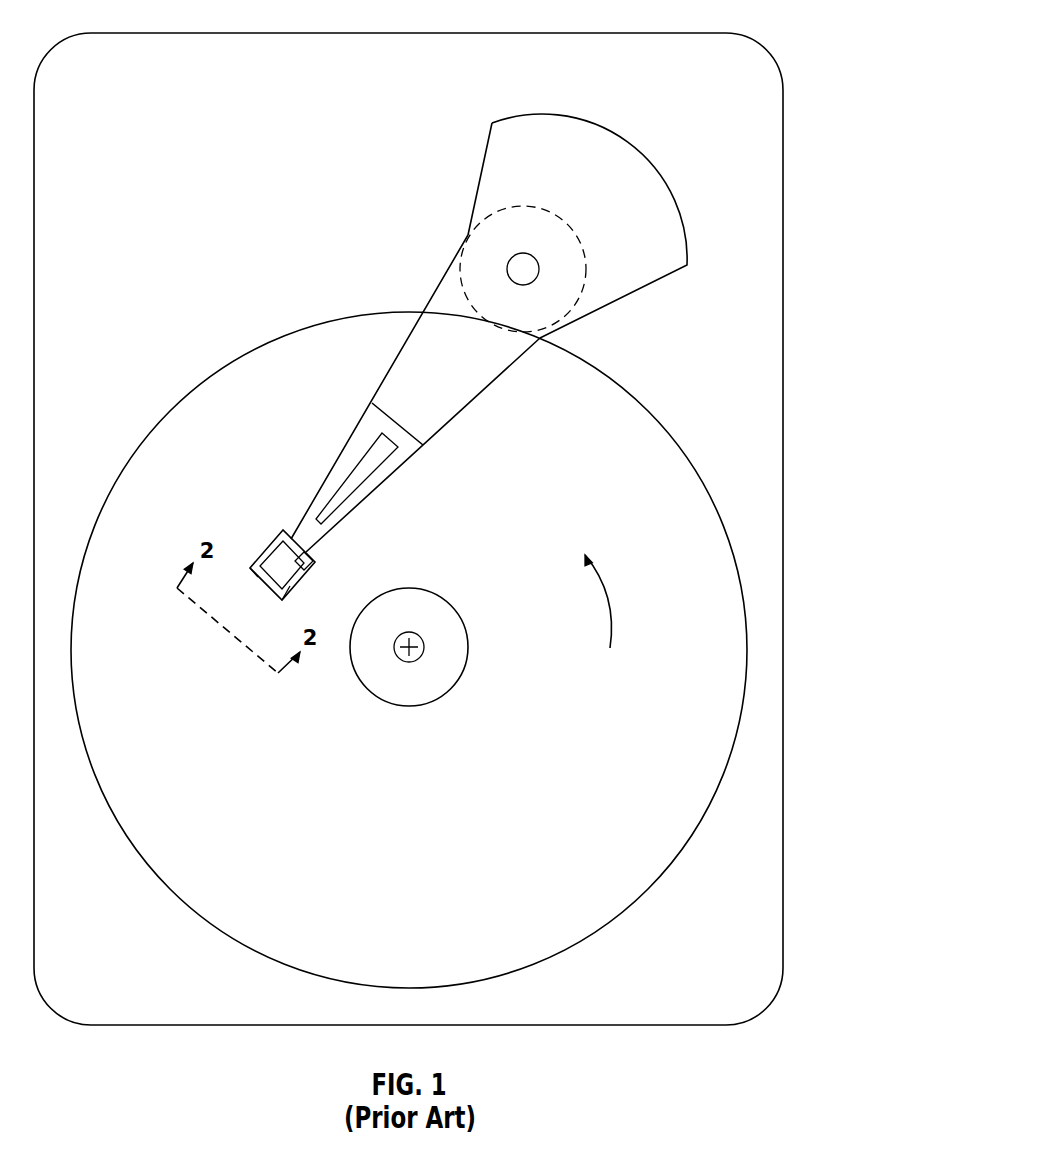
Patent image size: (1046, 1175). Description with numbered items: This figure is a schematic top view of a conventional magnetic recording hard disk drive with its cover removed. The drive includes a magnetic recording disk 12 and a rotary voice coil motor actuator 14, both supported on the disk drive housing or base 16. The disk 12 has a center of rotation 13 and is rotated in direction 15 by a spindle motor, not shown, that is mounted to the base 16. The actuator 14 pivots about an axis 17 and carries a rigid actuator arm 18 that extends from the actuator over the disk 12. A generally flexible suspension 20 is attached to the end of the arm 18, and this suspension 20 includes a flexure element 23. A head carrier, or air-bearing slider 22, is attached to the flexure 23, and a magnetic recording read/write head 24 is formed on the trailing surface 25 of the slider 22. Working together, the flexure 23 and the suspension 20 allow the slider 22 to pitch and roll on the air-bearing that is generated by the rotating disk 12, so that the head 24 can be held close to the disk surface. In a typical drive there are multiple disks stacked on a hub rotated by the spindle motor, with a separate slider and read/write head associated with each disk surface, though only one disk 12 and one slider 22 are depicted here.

The magnetic recording disk 12 is at (196, 862).
The center of rotation 13 is at (423, 637).
The rotary voice coil motor (VCM) actuator 14 is at (626, 138).
The direction of rotation 15 is at (607, 615).
The disk drive housing or base 16 is at (664, 33).
The pivot axis 17 is at (507, 268).
The rigid actuator arm 18 is at (397, 357).
The suspension 20 is at (360, 437).
The air-bearing slider 22 is at (283, 533).
The flexure element 23 is at (314, 558).
The magnetic recording read/write head 24 is at (288, 588).
The trailing surface 25 is at (258, 577).